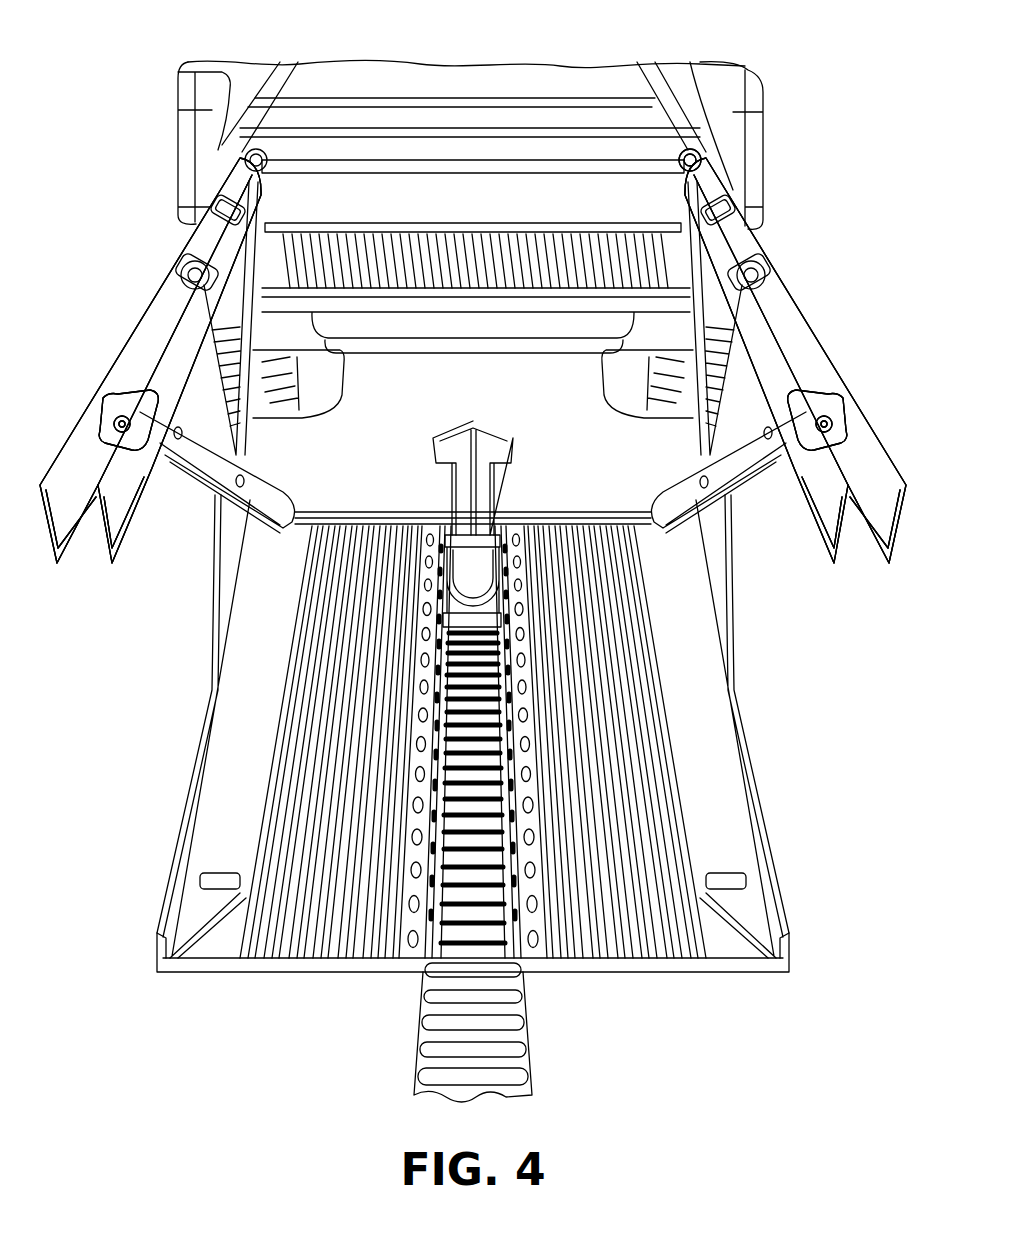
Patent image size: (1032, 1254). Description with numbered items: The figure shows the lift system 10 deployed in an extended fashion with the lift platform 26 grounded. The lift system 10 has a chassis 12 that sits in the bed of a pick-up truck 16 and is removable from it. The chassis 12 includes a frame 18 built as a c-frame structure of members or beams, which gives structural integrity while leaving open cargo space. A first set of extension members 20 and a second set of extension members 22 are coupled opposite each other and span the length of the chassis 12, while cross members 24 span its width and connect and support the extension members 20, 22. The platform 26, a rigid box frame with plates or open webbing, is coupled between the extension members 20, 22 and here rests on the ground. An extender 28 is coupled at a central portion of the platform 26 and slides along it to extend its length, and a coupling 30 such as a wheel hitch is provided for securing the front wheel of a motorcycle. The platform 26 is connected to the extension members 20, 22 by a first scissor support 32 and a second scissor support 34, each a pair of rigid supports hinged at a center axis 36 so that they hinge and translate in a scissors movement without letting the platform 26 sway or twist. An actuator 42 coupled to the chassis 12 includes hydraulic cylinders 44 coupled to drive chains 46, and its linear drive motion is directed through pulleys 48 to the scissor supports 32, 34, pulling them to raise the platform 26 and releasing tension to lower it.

The lift system 10 is at (116, 148).
The chassis 12 is at (469, 78).
The pick-up truck 16 is at (742, 72).
The frame 18 is at (684, 152).
The first set of extension members 20 is at (130, 317).
The second set of extension members 22 is at (822, 338).
The cross members 24 is at (333, 132).
The lift platform 26 is at (168, 887).
The extender 28 is at (422, 1058).
The coupling 30 is at (428, 480).
The first scissor support 32 is at (203, 487).
The second scissor support 34 is at (753, 472).
The center axis 36 is at (244, 480).
The actuator 42 is at (815, 262).
The hydraulic cylinders 44 is at (147, 353).
The drive chains 46 is at (728, 184).
The pulleys 48 is at (698, 192).